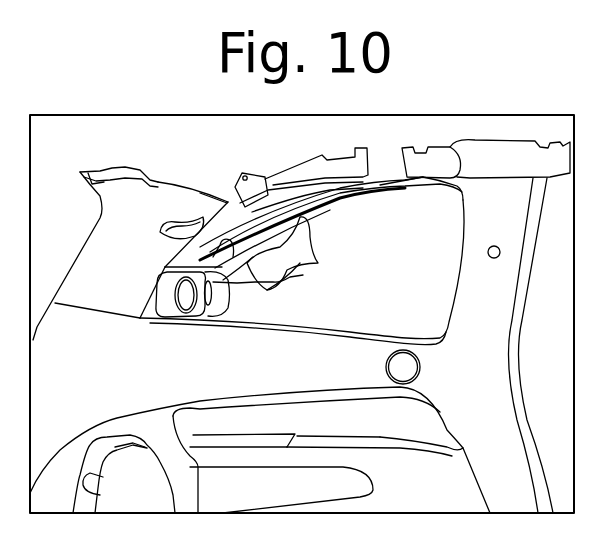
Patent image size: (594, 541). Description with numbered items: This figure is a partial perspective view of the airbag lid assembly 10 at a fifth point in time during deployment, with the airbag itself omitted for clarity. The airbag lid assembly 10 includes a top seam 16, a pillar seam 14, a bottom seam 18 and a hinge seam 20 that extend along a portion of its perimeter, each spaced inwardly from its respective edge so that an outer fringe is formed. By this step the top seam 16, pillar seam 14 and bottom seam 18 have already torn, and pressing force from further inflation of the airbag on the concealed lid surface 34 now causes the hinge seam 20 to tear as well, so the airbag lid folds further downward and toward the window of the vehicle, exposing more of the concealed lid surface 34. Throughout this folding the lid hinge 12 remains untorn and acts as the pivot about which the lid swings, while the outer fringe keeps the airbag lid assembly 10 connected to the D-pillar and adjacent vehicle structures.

The airbag lid assembly 10 is at (340, 266).
The lid hinge 12 is at (243, 237).
The pillar seam 14 is at (257, 283).
The top seam 16 is at (310, 240).
The bottom seam 18 is at (221, 294).
The hinge seam 20 is at (293, 213).
The concealed lid surface 34 is at (303, 275).